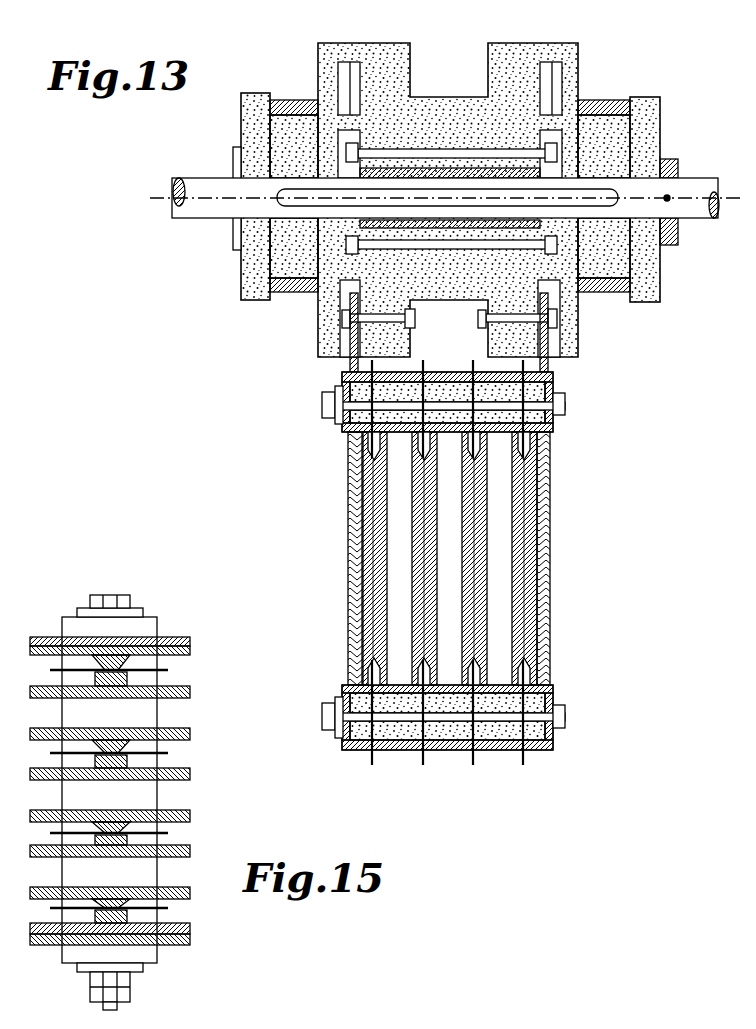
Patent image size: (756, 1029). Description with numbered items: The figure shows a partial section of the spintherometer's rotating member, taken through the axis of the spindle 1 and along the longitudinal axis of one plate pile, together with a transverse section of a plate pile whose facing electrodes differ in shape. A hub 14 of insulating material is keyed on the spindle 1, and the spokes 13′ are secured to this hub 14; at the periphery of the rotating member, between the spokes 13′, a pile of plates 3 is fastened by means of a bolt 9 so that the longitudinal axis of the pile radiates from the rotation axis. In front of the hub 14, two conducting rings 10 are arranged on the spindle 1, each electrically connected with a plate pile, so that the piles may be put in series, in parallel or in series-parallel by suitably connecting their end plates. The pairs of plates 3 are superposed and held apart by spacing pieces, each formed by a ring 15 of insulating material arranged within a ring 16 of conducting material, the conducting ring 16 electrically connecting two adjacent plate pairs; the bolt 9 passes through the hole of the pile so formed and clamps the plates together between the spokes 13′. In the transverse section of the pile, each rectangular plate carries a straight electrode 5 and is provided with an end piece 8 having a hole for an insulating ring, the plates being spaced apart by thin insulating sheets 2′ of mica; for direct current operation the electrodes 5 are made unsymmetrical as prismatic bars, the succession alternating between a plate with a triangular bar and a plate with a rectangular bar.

In FIG. 13, the spindle 1 is at (445, 180).
In FIG. 13, the conducting ring 10 is at (297, 292).
In FIG. 13, the hub 14 is at (384, 50).
In FIG. 13, the bolt 9 is at (533, 403).
In FIG. 15, the bolt 9 is at (116, 1007).
In FIG. 13, the ring of insulating material 15 is at (350, 443).
In FIG. 13, the spoke 13′ is at (543, 497).
In FIG. 15, the spoke 13′ is at (188, 641).
In FIG. 13, the electrode 5 is at (517, 538).
In FIG. 15, the electrode 5 is at (125, 645).
In FIG. 13, the ring of conducting material 16 is at (515, 445).
In FIG. 15, the ring of conducting material 16 is at (147, 872).
In FIG. 15, the plate 3 is at (40, 637).
In FIG. 15, the insulating sheet 2′ is at (170, 676).
In FIG. 15, the end piece 8 is at (147, 902).